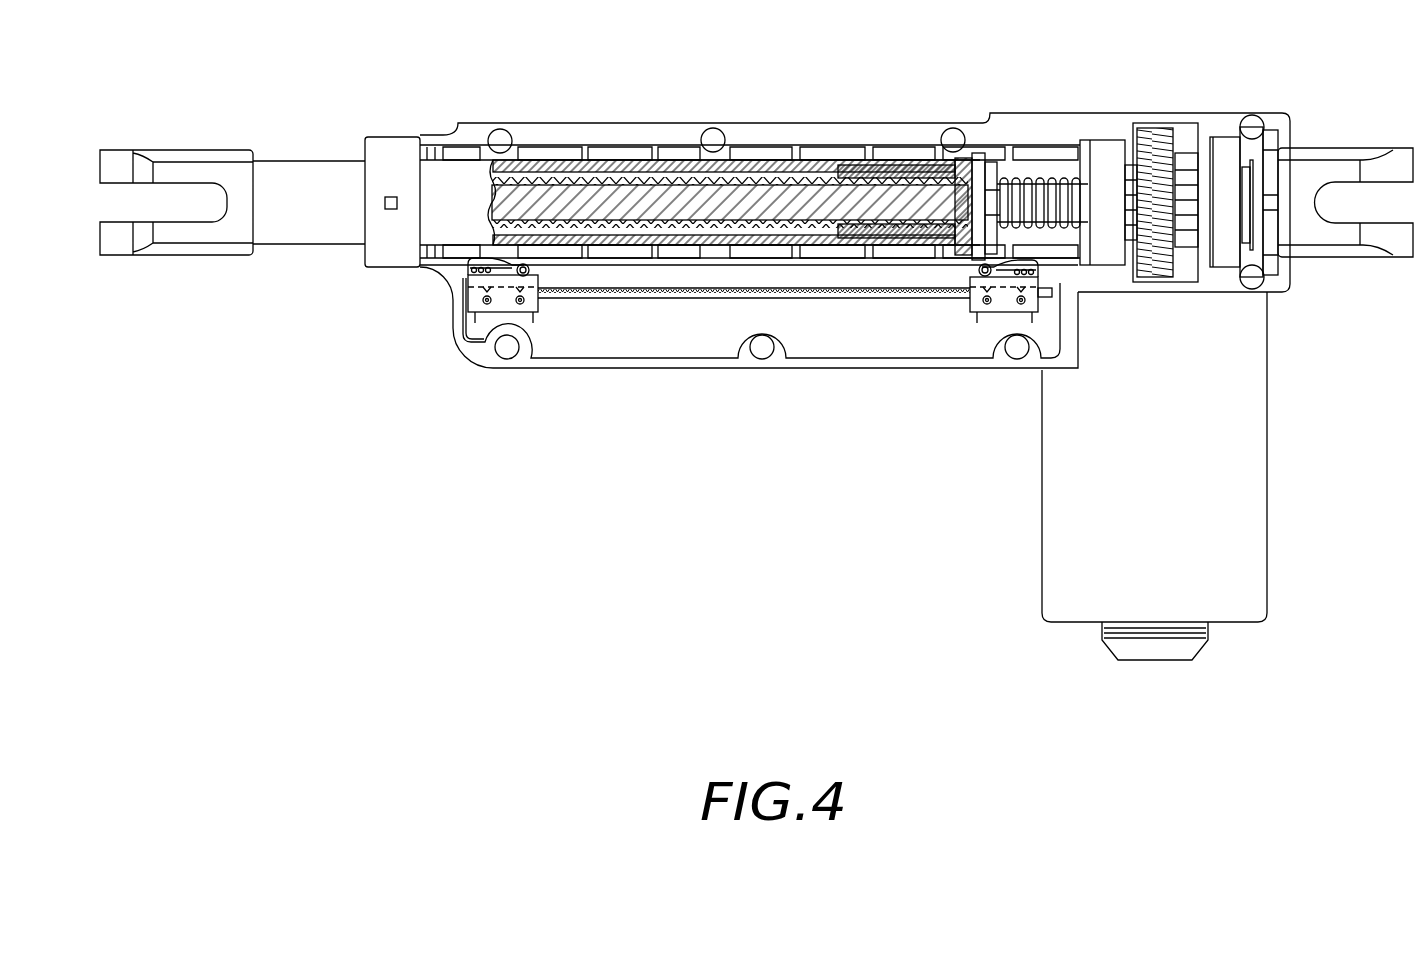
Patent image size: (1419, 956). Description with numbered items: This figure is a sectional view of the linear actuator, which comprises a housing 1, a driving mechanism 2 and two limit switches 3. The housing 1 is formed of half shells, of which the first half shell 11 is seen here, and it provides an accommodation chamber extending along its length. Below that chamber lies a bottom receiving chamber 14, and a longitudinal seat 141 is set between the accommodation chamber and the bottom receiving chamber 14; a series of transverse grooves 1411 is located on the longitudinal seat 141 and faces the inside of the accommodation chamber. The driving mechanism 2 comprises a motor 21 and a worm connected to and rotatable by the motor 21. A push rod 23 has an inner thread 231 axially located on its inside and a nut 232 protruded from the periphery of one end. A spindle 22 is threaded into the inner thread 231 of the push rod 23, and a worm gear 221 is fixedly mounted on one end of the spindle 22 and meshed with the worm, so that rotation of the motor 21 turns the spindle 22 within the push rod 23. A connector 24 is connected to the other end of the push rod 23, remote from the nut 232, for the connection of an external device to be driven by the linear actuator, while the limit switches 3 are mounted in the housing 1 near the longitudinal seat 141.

The housing 1 is at (884, 366).
The first half shell 11 is at (802, 362).
The bottom receiving chamber 14 is at (697, 347).
The longitudinal seat 141 is at (577, 293).
The transverse grooves 1411 is at (630, 292).
The driving mechanism 2 is at (298, 150).
The motor 21 is at (1260, 470).
The spindle 22 is at (1057, 170).
The worm gear 221 is at (1156, 133).
The push rod 23 is at (780, 165).
The inner thread 231 is at (902, 165).
The nut 232 is at (987, 167).
The connector 24 is at (187, 155).
The limit switches 3 is at (471, 300).